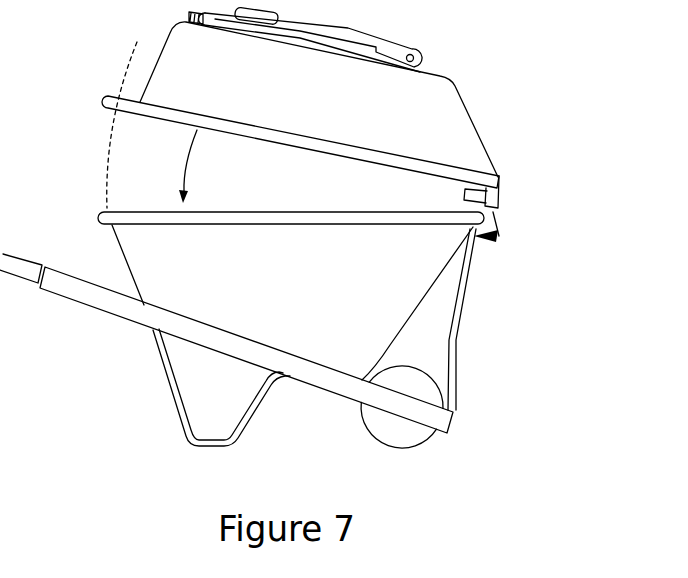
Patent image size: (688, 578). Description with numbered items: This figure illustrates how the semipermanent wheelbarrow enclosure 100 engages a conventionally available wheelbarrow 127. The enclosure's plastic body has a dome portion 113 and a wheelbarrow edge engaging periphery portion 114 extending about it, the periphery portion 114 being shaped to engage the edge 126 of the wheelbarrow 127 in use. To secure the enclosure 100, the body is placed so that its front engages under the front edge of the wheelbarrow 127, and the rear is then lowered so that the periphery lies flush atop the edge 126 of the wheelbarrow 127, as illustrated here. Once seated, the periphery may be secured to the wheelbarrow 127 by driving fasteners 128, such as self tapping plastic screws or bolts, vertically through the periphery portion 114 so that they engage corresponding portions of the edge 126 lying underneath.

The semipermanent wheelbarrow enclosure 100 is at (516, 83).
The dome portion 113 is at (462, 136).
The wheelbarrow edge engaging periphery portion 114 is at (507, 182).
The edge 126 is at (258, 210).
The wheelbarrow 127 is at (492, 339).
The fasteners 128 is at (135, 38).